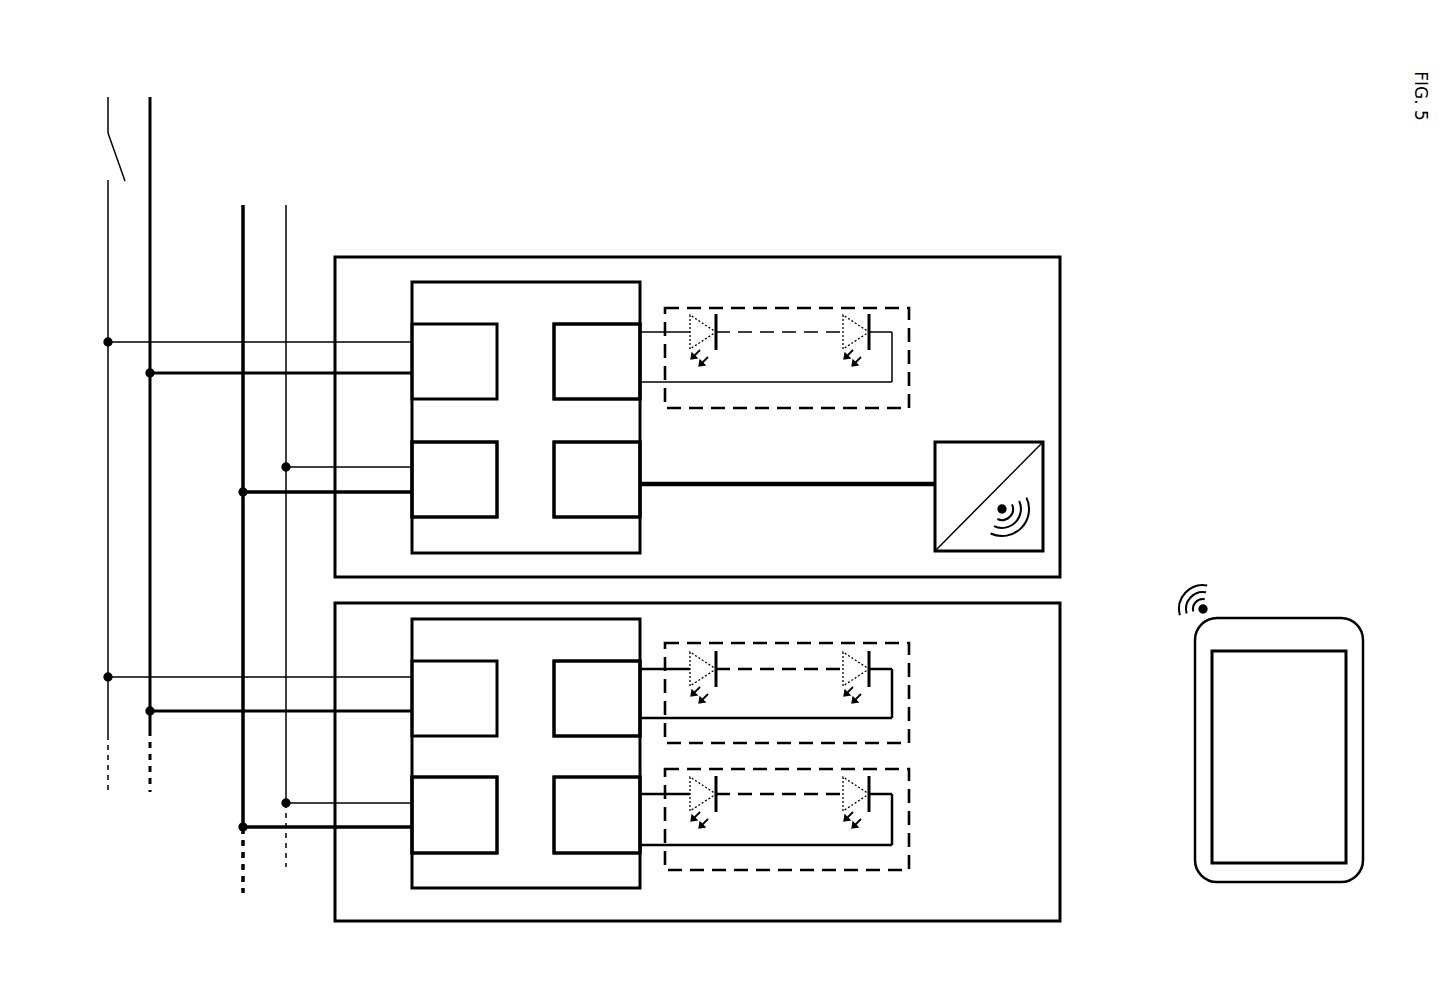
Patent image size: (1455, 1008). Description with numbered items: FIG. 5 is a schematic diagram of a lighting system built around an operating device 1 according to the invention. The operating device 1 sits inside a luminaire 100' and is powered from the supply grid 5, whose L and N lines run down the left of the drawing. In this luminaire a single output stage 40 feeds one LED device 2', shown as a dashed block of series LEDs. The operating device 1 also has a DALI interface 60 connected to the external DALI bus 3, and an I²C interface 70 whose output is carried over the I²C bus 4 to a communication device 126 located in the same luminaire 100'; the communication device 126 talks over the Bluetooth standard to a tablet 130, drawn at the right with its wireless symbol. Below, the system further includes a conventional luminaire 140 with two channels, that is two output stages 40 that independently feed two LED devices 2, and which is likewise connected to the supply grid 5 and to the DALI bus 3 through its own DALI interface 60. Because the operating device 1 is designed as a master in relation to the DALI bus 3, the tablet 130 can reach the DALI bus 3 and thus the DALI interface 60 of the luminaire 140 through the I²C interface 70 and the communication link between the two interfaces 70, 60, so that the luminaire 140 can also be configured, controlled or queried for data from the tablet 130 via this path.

The supply grid 5 is at (127, 82).
The DALI bus 3 is at (268, 238).
The operating device 1 is at (497, 282).
The output stage 40 is at (578, 324).
The DALI interface 60 is at (440, 492).
The I²C interface 70 is at (615, 490).
The I²C bus 4 is at (760, 484).
The communication device 126 is at (1043, 487).
The LED device 2' is at (774, 300).
The LED device 2 is at (789, 739).
The luminaire 100' is at (697, 376).
The luminaire 140 is at (1062, 880).
The tablet 130 is at (1363, 712).